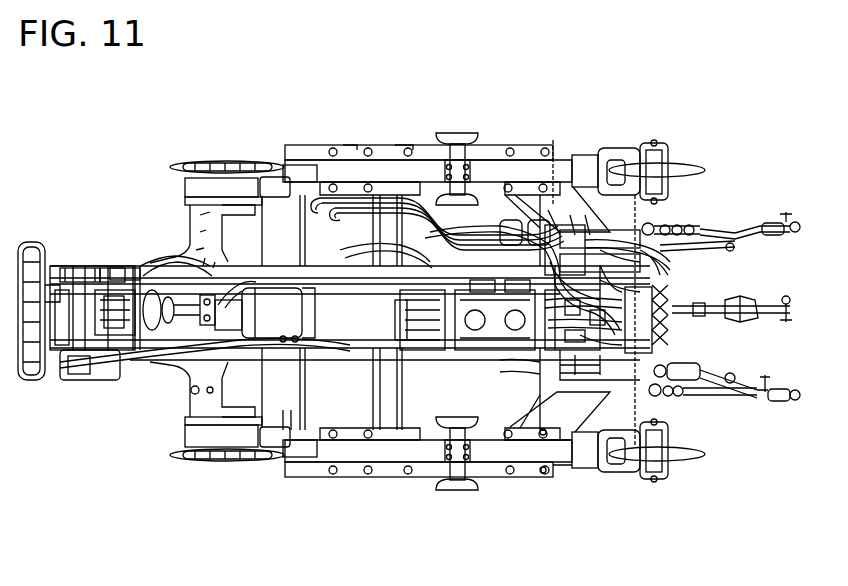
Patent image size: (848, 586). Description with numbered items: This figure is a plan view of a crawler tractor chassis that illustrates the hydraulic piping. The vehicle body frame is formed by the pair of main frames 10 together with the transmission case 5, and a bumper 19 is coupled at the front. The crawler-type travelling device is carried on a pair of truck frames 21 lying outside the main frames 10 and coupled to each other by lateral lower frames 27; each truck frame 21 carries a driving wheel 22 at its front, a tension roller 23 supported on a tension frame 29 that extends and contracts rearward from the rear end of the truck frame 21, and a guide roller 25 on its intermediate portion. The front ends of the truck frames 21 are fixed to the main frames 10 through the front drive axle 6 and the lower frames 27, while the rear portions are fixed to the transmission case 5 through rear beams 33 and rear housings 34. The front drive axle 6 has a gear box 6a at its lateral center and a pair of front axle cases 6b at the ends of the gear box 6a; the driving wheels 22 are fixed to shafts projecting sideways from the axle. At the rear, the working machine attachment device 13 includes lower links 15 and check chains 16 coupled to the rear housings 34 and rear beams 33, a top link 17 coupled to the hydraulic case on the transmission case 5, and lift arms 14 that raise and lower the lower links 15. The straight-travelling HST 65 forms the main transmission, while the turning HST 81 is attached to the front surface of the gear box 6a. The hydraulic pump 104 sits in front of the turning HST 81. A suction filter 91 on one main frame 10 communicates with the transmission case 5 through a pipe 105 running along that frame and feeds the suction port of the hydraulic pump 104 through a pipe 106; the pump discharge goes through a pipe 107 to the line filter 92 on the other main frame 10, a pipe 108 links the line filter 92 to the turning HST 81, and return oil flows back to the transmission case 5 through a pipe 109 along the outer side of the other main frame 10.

The transmission case 5 is at (530, 360).
The front drive axle 6 is at (187, 340).
The gear box 6a is at (182, 378).
The front axle cases 6b is at (190, 220).
The main frames 10 is at (360, 270).
The working machine attachment device 13 is at (743, 418).
The lift arms 14 is at (662, 385).
The lower links 15 is at (753, 226).
The check chains 16 is at (680, 228).
The top link 17 is at (737, 300).
The bumper 19 is at (33, 242).
The truck frames 21 is at (390, 143).
The driving wheels 22 is at (270, 158).
The tension rollers 23 is at (692, 162).
The guide rollers 25 is at (447, 133).
The lower frames 27 is at (292, 410).
The tension frames 29 is at (622, 165).
The rear beams 33 is at (556, 200).
The rear housings 34 is at (587, 473).
The straight-travelling HST 65 is at (420, 360).
The turning HST 81 is at (118, 268).
The suction filter 91 is at (97, 337).
The line filter 92 is at (78, 258).
The hydraulic pump 104 is at (85, 312).
The pipe 105 is at (327, 363).
The pipe 106 is at (100, 333).
The pipe 107 is at (85, 300).
The pipe 108 is at (102, 265).
The pipe 109 is at (158, 255).